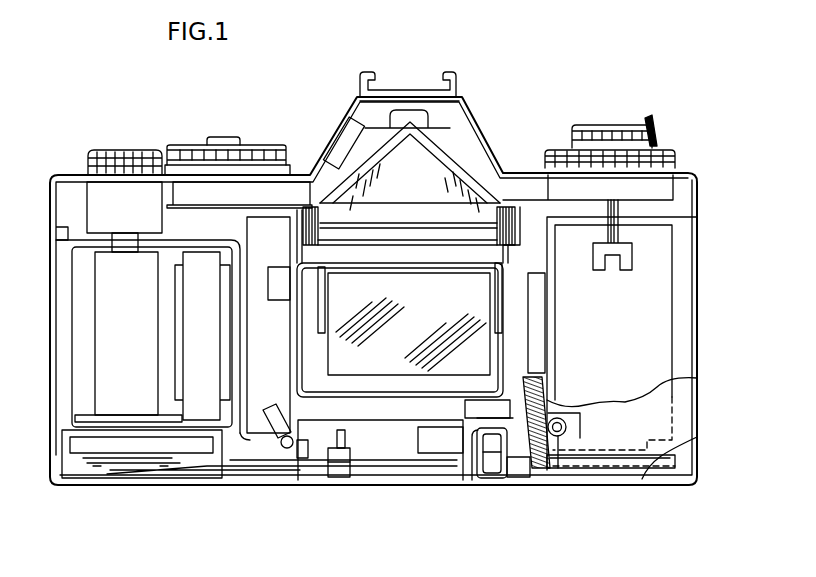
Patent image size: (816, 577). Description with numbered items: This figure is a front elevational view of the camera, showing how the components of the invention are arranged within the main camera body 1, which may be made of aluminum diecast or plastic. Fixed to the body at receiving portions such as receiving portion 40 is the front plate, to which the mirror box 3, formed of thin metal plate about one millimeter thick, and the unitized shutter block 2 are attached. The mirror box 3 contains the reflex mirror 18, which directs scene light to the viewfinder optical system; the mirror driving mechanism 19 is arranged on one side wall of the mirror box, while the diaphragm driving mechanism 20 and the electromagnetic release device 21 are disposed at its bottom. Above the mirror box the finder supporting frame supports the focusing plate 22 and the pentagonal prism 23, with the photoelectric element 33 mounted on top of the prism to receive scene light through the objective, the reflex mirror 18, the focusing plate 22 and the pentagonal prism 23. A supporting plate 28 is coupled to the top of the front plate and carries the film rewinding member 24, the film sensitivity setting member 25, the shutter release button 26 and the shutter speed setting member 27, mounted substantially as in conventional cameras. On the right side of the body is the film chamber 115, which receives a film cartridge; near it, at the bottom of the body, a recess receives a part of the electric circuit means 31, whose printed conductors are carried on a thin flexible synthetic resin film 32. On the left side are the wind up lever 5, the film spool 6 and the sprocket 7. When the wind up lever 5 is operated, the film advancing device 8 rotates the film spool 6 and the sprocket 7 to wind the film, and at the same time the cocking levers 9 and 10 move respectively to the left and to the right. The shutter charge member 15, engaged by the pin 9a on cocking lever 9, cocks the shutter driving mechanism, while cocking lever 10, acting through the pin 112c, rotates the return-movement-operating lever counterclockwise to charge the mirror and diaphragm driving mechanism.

The main camera body 1 is at (60, 413).
The unitized shutter block 2 is at (253, 437).
The mirror box 3 is at (382, 397).
The wind up lever 5 is at (92, 160).
The film spool 6 is at (112, 275).
The sprocket 7 is at (195, 335).
The film advancing device 8 is at (127, 447).
The cocking lever 9 is at (205, 468).
The pin 9a is at (308, 450).
The cocking lever 10 is at (173, 473).
The shutter charge member 15 is at (287, 448).
The reflex mirror 18 is at (502, 440).
The mirror driving mechanism 19 is at (303, 357).
The diaphragm driving mechanism 20 is at (424, 447).
The electromagnetic release device 21 is at (405, 420).
The focusing plate 22 is at (403, 240).
The pentagonal prism 23 is at (405, 143).
The film rewinding member 24 is at (612, 128).
The film sensitivity setting member 25 is at (673, 160).
The shutter release button 26 is at (220, 137).
The shutter speed setting member 27 is at (298, 183).
The supporting plate 28 is at (190, 203).
The electric circuit means 31 is at (299, 183).
The flexible synthetic resin film 32 is at (483, 160).
The photoelectric element 33 is at (427, 110).
The receiving portion 40 is at (567, 427).
The pin 112c is at (356, 480).
The film chamber 115 is at (657, 332).